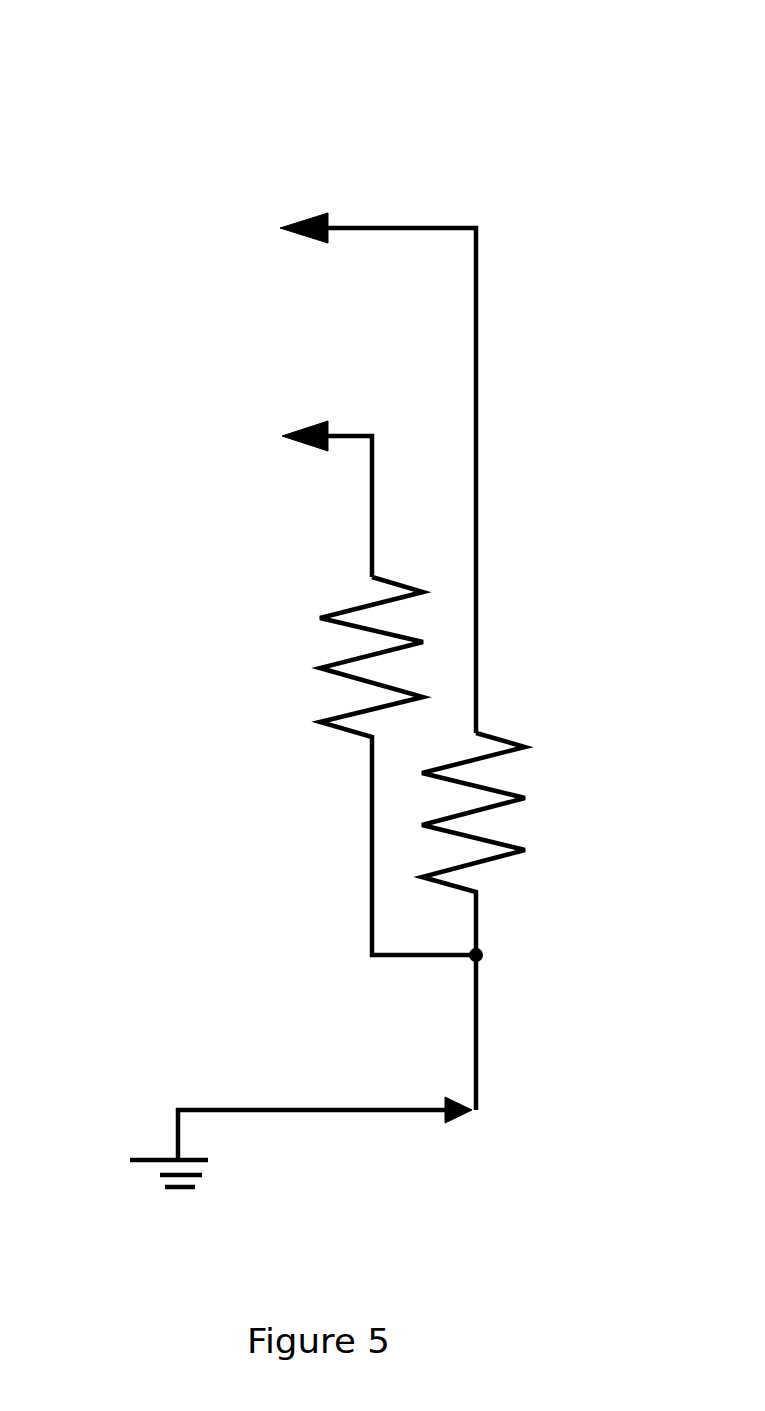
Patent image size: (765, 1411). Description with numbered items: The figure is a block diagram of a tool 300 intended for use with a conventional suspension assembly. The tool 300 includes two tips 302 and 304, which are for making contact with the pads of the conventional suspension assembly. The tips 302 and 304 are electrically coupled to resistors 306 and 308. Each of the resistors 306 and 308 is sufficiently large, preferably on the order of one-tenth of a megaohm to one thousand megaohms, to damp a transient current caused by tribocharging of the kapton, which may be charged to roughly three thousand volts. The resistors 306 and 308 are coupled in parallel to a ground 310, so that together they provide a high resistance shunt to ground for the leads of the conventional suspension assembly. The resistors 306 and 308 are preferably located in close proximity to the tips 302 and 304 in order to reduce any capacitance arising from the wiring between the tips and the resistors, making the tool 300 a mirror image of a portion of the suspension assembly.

The tool 300 is at (357, 41).
The tip 302 is at (310, 215).
The tip 304 is at (313, 420).
The resistor 306 is at (320, 618).
The resistor 308 is at (525, 798).
The ground 310 is at (160, 1160).